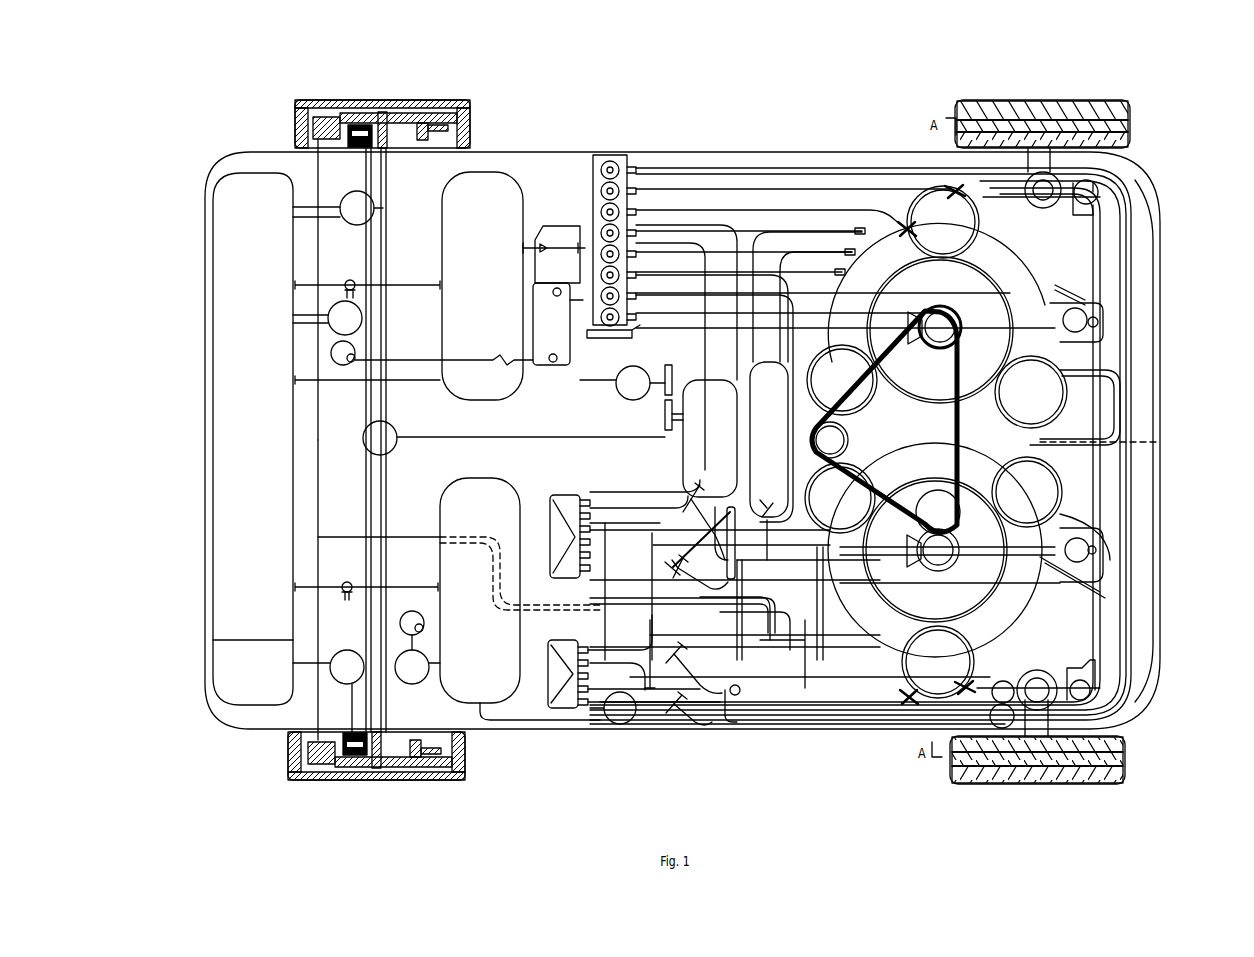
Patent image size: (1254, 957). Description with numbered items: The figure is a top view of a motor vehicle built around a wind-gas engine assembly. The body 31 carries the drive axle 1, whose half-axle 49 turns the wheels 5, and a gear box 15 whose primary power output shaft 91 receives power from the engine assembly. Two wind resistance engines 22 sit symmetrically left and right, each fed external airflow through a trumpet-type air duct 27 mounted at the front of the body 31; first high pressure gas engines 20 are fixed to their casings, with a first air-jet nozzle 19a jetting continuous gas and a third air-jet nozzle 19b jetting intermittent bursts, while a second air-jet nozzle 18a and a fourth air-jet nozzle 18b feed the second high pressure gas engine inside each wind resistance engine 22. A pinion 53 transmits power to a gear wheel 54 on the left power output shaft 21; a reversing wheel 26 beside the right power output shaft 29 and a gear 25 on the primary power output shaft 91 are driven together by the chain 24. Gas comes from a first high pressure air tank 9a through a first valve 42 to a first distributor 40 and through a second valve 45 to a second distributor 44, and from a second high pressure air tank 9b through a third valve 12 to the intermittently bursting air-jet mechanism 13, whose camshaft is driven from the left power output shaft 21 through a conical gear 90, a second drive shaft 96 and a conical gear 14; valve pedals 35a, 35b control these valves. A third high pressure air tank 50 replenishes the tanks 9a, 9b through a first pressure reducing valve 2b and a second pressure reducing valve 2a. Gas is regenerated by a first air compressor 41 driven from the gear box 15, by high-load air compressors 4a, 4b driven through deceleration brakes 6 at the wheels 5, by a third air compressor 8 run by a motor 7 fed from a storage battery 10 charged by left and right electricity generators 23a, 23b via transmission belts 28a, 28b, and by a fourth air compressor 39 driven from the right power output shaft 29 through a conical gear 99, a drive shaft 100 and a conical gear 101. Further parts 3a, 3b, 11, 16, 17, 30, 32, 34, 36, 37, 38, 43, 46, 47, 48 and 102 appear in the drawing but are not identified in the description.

The drive axle 1 is at (295, 283).
The second pressure reducing valve 2a is at (347, 307).
The first pressure reducing valve 2b is at (343, 672).
The front steering shaft 3a is at (367, 352).
The rear steering shaft 3b is at (277, 677).
The high-load air compressor 4a is at (354, 212).
The high-load air compressor 4b is at (313, 763).
The wheel 5 is at (322, 104).
The deceleration brake 6 is at (392, 108).
The motor 7 is at (371, 430).
The third air compressor 8 is at (370, 330).
The first high pressure air tank 9a is at (453, 673).
The second high pressure air tank 9b is at (470, 200).
The storage battery 10 is at (545, 318).
The control box 11 is at (547, 233).
The third valve 12 is at (555, 249).
The intermittently bursting air-jet mechanism 13 is at (600, 213).
The conical gear 14 is at (630, 330).
The second drive shaft 96 is at (682, 380).
The gear box 15 is at (752, 370).
The pipe 16 is at (810, 267).
The pipe 17 is at (833, 245).
The second air-jet nozzle 18a is at (850, 253).
The fourth air-jet nozzle 18b is at (857, 231).
The first air-jet nozzle 19a is at (907, 230).
The third air-jet nozzle 19b is at (953, 195).
The first high pressure gas engine 20 is at (958, 205).
The pinion 53 is at (983, 287).
The left power output shaft 21 is at (940, 324).
The wind resistance engine 22 is at (1002, 255).
The gear wheel 54 is at (1047, 327).
The transmission belt 28a is at (1000, 287).
The left electricity generator 23a is at (1090, 318).
The chain 24 is at (1000, 358).
The conical gear 90 is at (1040, 365).
The gear 25 is at (997, 463).
The right electricity generator 23b is at (1087, 535).
The reversing wheel 26 is at (1095, 548).
The trumpet-type air duct 27 is at (1027, 560).
The transmission belt 28b is at (945, 508).
The right power output shaft 29 is at (975, 640).
The conical gear 99 is at (1080, 585).
The third high pressure air tank 50 is at (300, 700).
The half-axle 49 is at (352, 690).
The drive shaft 48 is at (383, 703).
The valve 47 is at (410, 668).
The pump 46 is at (457, 650).
The second valve 45 is at (523, 677).
The second distributor 44 is at (543, 663).
The manifold 43 is at (557, 650).
The first valve 42 is at (560, 640).
The conical gear 101 is at (540, 600).
The first air compressor 41 is at (556, 585).
The first distributor 40 is at (575, 595).
The valve 102 is at (618, 724).
The fourth air compressor 39 is at (620, 700).
The pipe 38 is at (650, 690).
The pedal 37 is at (687, 670).
The pedal 36 is at (705, 680).
The valve pedal 35a is at (722, 712).
The valve pedal 35b is at (747, 660).
The pipe 34 is at (767, 640).
The primary power output shaft 91 is at (807, 720).
The drive shaft 100 is at (847, 720).
The bevel gear 32 is at (923, 720).
The body 31 is at (945, 720).
The rear wheel assembly 30 is at (1010, 710).